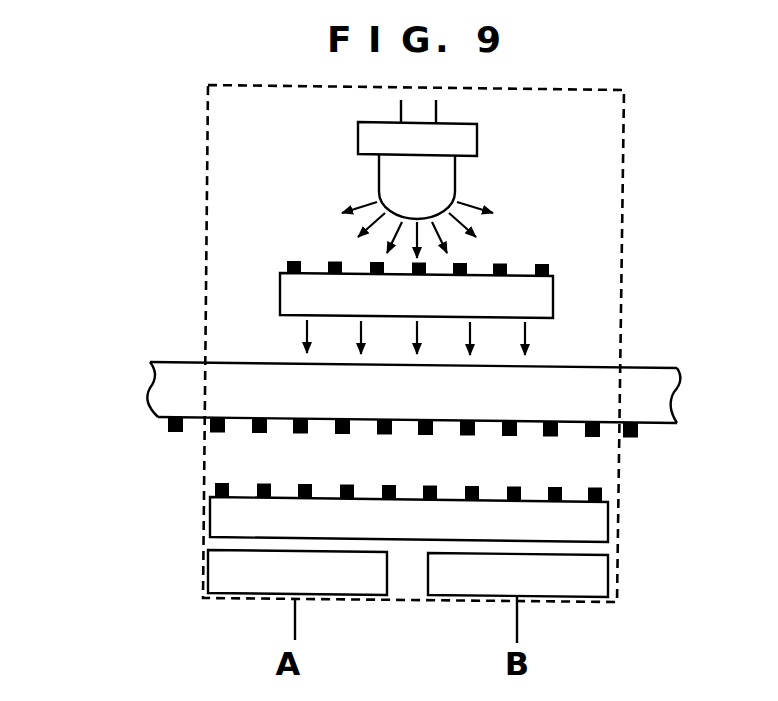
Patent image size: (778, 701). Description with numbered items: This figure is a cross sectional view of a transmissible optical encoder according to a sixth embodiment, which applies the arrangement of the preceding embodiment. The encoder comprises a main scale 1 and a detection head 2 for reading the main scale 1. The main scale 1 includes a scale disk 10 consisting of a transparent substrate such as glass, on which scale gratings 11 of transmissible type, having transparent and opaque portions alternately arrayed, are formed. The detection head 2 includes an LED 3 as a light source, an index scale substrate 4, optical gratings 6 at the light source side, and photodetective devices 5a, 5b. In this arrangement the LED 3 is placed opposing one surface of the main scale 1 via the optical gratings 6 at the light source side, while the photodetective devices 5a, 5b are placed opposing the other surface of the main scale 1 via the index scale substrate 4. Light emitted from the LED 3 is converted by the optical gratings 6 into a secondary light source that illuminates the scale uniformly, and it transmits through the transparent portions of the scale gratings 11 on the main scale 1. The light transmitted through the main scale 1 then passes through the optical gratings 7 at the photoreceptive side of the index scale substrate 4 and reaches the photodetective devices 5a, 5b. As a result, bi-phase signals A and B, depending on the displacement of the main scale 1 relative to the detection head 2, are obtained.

The main scale 1 is at (378, 402).
The detection head 2 is at (206, 222).
The LED 3 is at (397, 182).
The index scale substrate 4 is at (406, 513).
The photodetective device 5a is at (236, 579).
The photodetective device 5b is at (580, 580).
The optical gratings at the light source side 6 is at (542, 262).
The optical gratings at the photoreceptive side 7 is at (215, 490).
The scale disk 10 is at (168, 399).
The scale gratings 11 is at (637, 437).